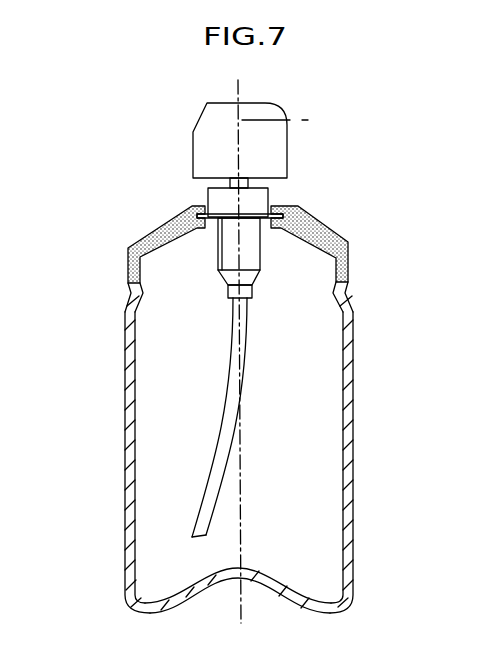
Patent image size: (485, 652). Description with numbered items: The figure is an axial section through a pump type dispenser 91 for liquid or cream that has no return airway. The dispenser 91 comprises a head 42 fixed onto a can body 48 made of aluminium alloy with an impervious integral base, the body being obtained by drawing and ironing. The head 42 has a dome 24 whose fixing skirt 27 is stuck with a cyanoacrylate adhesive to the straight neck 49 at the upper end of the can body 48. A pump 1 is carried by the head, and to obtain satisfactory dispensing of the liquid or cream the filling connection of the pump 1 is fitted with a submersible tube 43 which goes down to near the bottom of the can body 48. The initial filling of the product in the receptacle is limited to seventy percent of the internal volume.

The pump 1 is at (260, 266).
The dome 24 is at (326, 236).
The fixing skirt 27 is at (350, 268).
The head 42 is at (163, 223).
The submersible tube 43 is at (240, 430).
The can body 48 is at (126, 413).
The straight neck 49 is at (142, 270).
The dispenser 91 is at (217, 440).